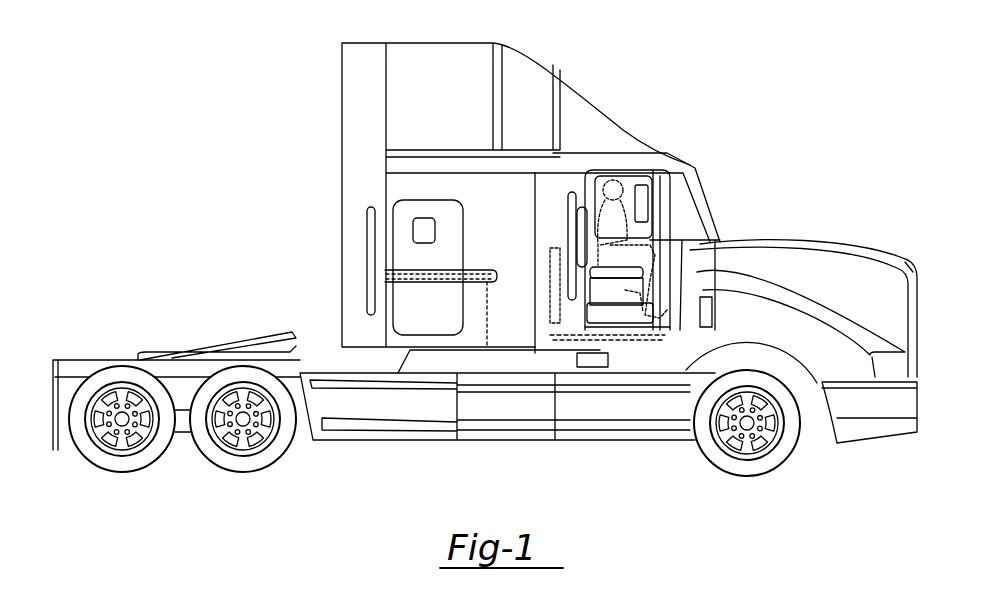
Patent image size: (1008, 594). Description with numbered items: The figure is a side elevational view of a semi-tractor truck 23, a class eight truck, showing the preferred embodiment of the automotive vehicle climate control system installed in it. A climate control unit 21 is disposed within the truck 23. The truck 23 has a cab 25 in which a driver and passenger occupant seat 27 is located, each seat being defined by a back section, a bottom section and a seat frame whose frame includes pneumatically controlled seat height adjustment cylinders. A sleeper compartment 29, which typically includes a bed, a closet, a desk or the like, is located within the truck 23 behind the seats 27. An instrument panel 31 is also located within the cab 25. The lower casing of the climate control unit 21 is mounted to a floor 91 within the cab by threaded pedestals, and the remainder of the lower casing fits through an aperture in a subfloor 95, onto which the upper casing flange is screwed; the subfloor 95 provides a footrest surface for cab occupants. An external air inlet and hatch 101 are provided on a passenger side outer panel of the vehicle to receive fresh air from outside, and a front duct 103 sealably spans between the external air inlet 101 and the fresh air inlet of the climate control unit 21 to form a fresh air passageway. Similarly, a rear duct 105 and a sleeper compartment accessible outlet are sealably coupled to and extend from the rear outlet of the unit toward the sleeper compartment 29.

The climate control unit 21 is at (674, 201).
The semi-tractor truck 23 is at (268, 255).
The cab 25 is at (633, 317).
The occupant seat 27 is at (585, 232).
The sleeper compartment 29 is at (488, 188).
The instrument panel 31 is at (712, 242).
The floor 91 is at (633, 330).
The subfloor 95 is at (877, 256).
The external air inlet and hatch 101 is at (717, 306).
The front duct 103 is at (626, 342).
The rear duct 105 is at (553, 288).